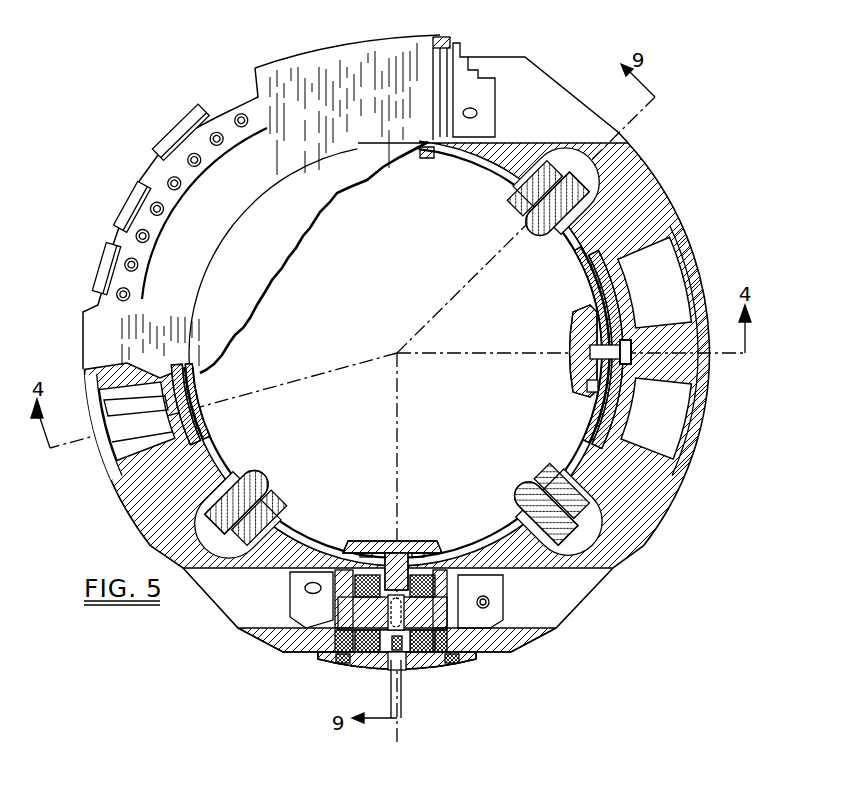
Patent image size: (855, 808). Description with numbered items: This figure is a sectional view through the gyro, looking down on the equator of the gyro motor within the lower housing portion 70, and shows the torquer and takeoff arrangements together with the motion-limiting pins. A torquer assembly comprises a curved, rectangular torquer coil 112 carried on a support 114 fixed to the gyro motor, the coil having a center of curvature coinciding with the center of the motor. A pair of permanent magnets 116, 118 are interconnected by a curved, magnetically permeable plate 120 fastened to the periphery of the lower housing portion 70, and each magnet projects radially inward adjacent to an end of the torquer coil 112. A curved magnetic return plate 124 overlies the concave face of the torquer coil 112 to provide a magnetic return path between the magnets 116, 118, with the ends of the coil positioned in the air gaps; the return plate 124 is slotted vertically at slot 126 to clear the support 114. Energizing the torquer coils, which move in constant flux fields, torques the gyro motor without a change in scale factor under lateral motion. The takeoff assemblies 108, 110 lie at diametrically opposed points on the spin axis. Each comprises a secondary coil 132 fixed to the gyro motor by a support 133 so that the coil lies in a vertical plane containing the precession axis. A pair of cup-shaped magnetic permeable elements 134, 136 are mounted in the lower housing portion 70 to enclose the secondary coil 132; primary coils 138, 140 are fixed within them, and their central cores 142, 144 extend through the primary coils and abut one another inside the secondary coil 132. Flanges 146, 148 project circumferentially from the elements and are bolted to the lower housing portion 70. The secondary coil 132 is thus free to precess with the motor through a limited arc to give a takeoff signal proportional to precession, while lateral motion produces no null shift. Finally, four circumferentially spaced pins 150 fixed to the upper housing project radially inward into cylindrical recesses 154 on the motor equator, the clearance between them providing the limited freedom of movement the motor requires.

The lower housing portion 70 is at (640, 140).
The takeoff assembly 108 is at (325, 670).
The takeoff assembly 110 is at (447, 34).
The torquer coil 112 is at (603, 289).
The support 114 is at (590, 358).
The permanent magnet 116 is at (684, 434).
The permanent magnet 118 is at (674, 252).
The magnetically permeable plate 120 is at (104, 421).
The magnetic return plate 124 is at (587, 266).
The slot 126 is at (592, 392).
The secondary coil 132 is at (399, 556).
The support 133 is at (427, 160).
The cup-shaped magnetic permeable element 134 is at (395, 722).
The cup-shaped magnetic permeable element 136 is at (408, 676).
The primary coil 138 is at (362, 541).
The primary coil 140 is at (446, 560).
The central core 142 is at (386, 658).
The central core 144 is at (416, 656).
The flange 146 is at (494, 102).
The flange 148 is at (505, 598).
The pin 150 is at (546, 176).
The cylindrical recess 154 is at (522, 216).